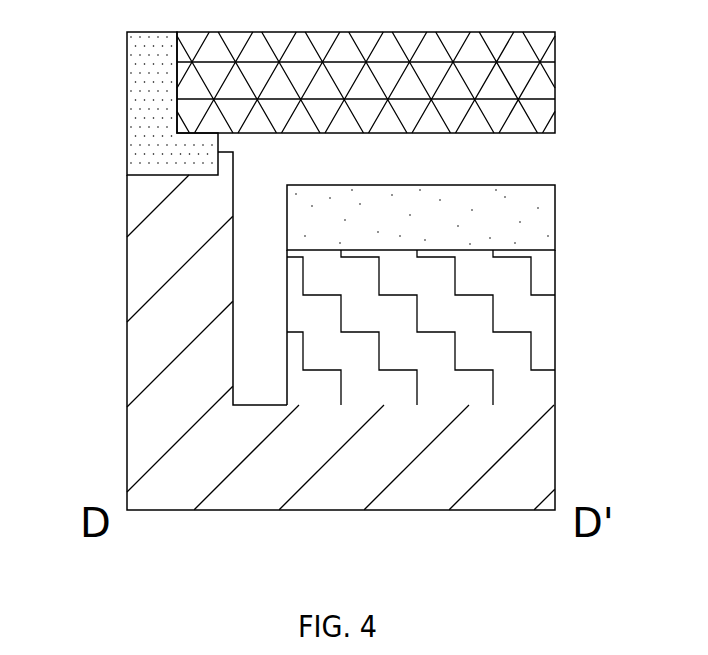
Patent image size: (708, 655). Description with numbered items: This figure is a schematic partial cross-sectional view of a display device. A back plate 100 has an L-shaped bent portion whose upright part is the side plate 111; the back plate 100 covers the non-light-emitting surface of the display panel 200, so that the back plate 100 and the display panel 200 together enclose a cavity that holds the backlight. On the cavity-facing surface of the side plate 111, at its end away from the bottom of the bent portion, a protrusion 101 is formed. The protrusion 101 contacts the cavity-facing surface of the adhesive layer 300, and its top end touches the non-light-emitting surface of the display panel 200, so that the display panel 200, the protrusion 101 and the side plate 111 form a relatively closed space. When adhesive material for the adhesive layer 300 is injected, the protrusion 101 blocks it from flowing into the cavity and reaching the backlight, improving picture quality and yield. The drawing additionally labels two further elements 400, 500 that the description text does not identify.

The back plate 100 is at (535, 462).
The protrusion 101 is at (226, 173).
The side plate 111 is at (148, 307).
The display panel 200 is at (537, 93).
The adhesive layer 300 is at (158, 110).
The intermediate layer 400 is at (538, 240).
The stepped structure layer 500 is at (535, 342).